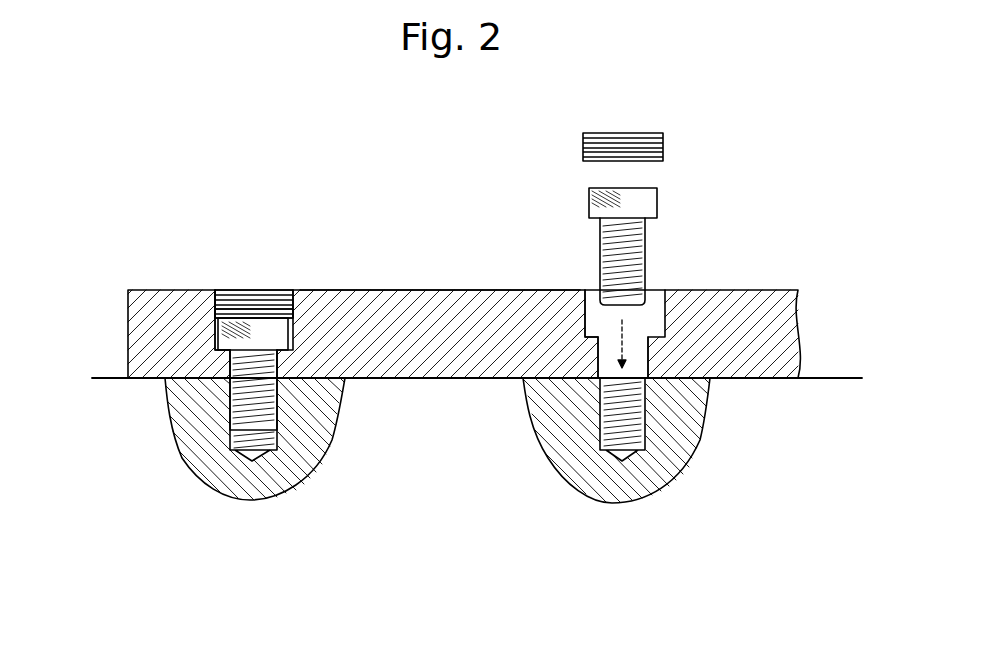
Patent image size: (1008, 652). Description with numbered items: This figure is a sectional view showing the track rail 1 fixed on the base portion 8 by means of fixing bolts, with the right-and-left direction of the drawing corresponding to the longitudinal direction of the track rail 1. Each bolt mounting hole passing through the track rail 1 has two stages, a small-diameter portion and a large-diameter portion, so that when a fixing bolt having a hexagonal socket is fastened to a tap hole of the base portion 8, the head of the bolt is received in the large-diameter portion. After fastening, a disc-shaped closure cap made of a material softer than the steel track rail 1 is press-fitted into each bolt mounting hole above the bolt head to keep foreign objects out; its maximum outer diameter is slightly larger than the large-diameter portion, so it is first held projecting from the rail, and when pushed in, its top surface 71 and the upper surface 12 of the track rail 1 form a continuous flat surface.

The track rail 1 is at (760, 284).
The base portion 8 is at (835, 372).
The upper surface 12 is at (410, 290).
The top surface 71 is at (248, 294).